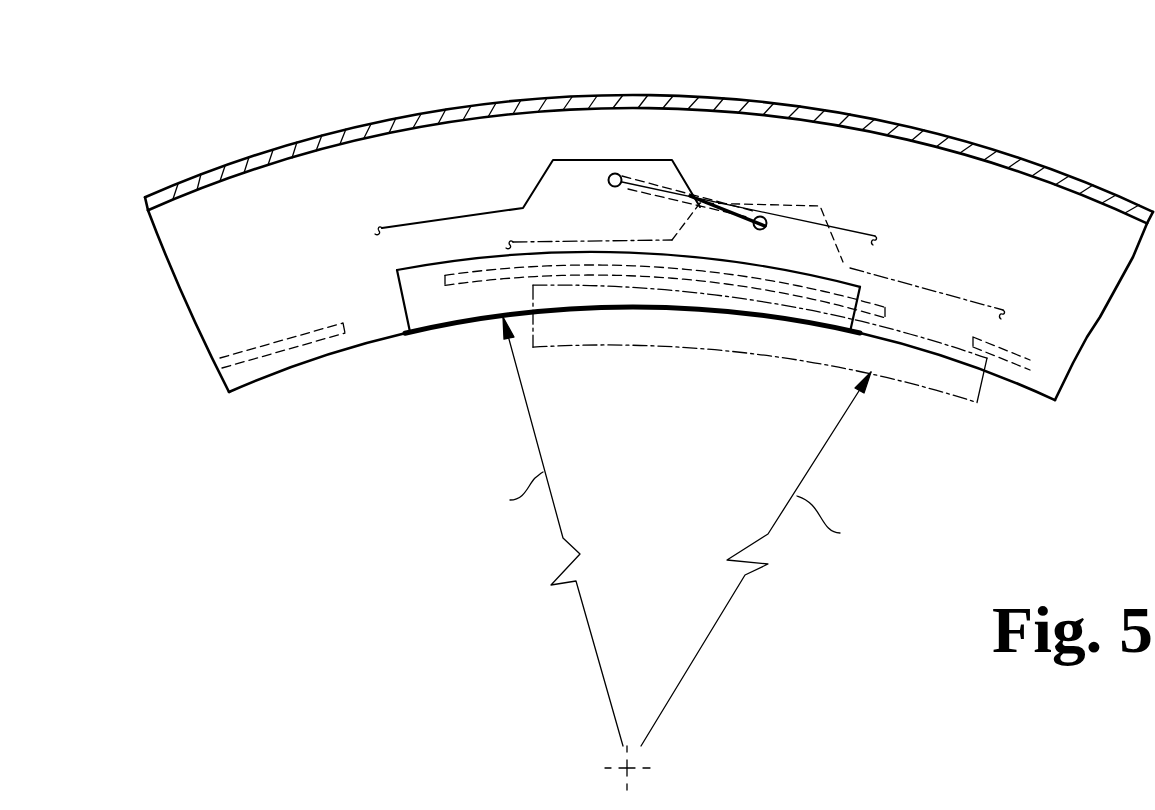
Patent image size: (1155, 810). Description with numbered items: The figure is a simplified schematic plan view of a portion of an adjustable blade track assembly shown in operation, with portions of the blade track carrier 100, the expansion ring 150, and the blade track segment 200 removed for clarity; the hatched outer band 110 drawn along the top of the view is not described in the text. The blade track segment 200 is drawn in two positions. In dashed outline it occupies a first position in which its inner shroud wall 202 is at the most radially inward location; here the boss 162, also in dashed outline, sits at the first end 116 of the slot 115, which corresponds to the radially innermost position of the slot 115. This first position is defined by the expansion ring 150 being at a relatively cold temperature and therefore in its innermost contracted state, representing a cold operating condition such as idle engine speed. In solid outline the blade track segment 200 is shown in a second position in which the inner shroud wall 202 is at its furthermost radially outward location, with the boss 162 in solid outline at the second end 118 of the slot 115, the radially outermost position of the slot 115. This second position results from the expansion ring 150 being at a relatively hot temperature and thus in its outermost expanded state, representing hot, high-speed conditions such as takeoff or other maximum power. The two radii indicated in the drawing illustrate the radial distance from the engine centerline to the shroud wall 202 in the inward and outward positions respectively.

The blade track carrier 100 is at (950, 82).
The outer skin 110 is at (352, 126).
The slot 115 is at (660, 187).
The first end 116 is at (768, 224).
The second end 118 is at (623, 176).
The expansion ring 150 is at (437, 219).
The boss 162 is at (582, 158).
The blade track segment 200 is at (413, 312).
The inner shroud wall 202 is at (437, 330).